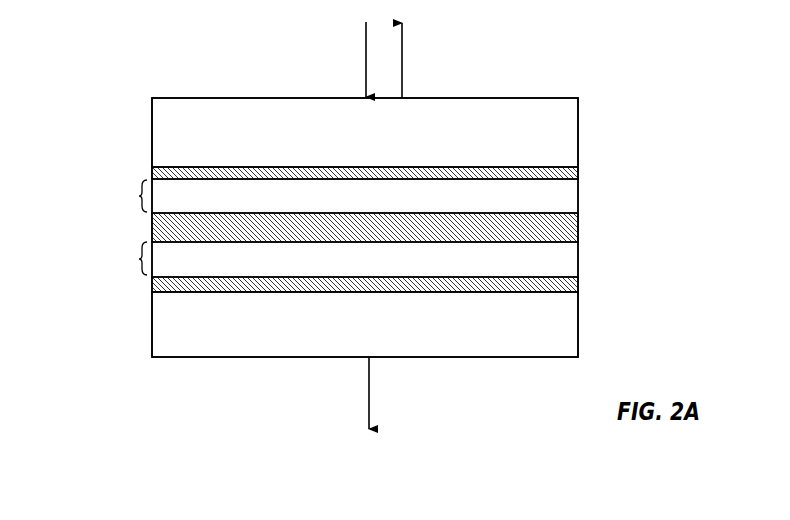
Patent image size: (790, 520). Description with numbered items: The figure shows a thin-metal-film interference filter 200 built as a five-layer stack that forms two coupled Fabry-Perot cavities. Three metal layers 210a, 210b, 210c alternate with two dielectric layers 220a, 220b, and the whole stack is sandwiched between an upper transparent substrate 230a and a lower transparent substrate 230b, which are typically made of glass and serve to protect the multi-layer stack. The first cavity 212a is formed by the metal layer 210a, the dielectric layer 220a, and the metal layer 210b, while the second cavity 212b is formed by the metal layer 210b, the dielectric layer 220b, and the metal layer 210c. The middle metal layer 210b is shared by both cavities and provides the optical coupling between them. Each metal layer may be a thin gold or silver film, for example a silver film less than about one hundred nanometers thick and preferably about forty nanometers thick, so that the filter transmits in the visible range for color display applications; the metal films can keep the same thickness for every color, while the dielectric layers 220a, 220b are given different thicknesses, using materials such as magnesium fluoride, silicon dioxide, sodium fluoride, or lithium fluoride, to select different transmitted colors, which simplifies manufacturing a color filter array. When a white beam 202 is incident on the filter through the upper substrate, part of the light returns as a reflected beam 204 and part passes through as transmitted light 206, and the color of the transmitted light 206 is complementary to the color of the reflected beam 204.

The thin-metal-film interference filter 200 is at (210, 60).
The white beam 202 is at (366, 36).
The reflected beam 204 is at (444, 58).
The transmitted light 206 is at (410, 393).
The metal layer 210a is at (411, 160).
The metal layer 210b is at (411, 214).
The metal layer 210c is at (411, 270).
The first cavity 212a is at (116, 196).
The second cavity 212b is at (116, 258).
The dielectric layer 220a is at (394, 208).
The dielectric layer 220b is at (393, 271).
The transparent substrate 230a is at (318, 124).
The transparent substrate 230b is at (319, 324).